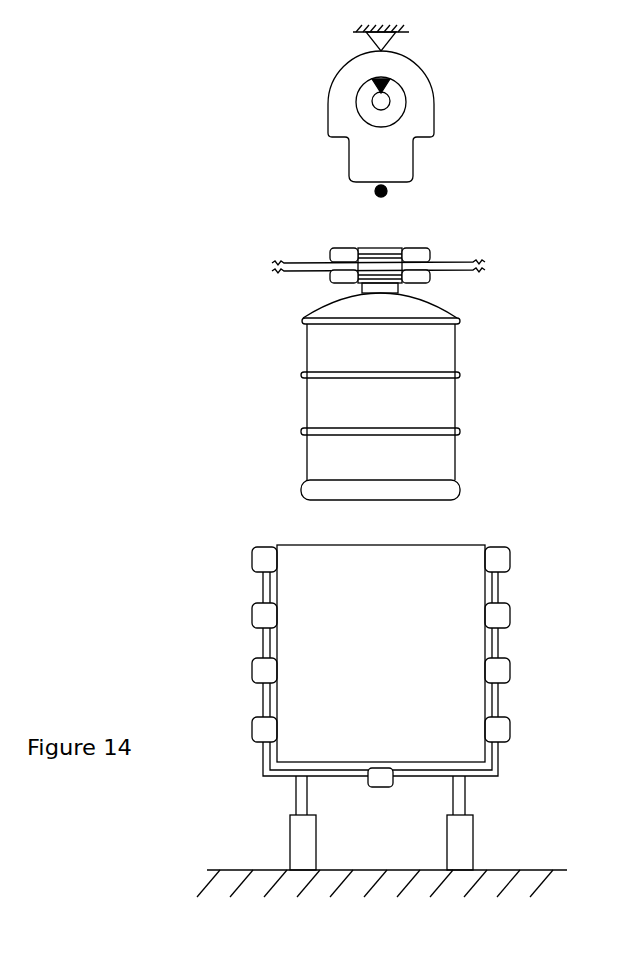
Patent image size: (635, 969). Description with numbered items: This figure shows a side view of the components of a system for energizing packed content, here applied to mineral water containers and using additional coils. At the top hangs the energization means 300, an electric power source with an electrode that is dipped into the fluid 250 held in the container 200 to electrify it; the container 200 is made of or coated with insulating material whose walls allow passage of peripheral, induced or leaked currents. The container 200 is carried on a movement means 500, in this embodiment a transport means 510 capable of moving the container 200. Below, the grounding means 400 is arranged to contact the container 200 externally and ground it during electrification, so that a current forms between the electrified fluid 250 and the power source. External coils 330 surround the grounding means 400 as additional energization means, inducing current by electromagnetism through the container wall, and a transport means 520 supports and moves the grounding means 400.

The energization means 300 is at (328, 96).
The movement means 500 is at (275, 262).
The transport means 510 is at (422, 250).
The container 200 is at (447, 396).
The fluid 250 is at (432, 345).
The external coils 330 is at (267, 613).
The grounding means 400 is at (330, 595).
The transport means 520 is at (292, 845).